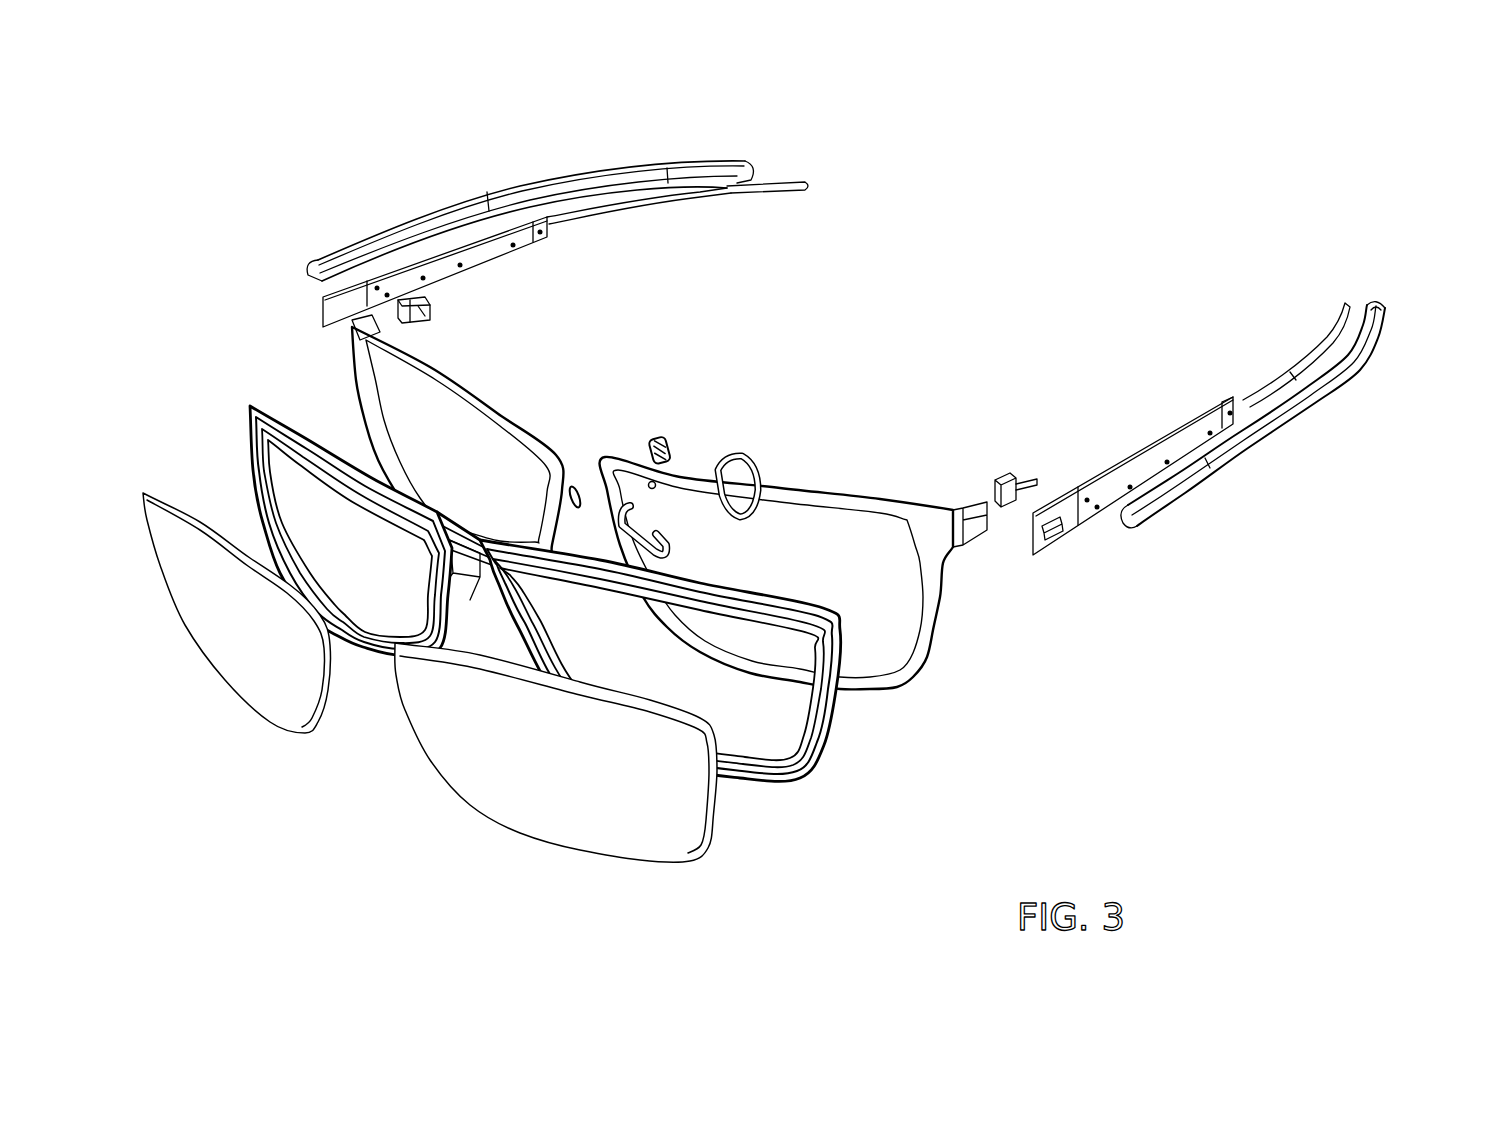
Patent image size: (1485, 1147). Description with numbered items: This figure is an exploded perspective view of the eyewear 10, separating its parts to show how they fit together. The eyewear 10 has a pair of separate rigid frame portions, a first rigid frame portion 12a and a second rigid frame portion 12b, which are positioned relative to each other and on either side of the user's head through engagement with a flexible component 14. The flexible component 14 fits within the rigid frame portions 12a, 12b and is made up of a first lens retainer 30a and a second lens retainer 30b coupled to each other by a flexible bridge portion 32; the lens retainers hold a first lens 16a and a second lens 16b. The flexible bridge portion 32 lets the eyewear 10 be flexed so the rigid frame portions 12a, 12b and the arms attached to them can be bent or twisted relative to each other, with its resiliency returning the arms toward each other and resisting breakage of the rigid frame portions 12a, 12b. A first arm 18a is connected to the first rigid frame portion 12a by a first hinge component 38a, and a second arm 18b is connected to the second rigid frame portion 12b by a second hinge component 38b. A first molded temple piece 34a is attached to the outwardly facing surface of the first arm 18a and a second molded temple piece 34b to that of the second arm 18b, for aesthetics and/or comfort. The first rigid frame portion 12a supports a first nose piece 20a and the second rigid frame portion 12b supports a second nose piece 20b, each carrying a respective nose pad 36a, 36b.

The eyewear 10 is at (784, 525).
The first rigid frame portion 12a is at (530, 430).
The second rigid frame portion 12b is at (857, 495).
The flexible component 14 is at (552, 609).
The first lens 16a is at (248, 642).
The second lens 16b is at (588, 762).
The first arm 18a is at (410, 273).
The second arm 18b is at (1157, 457).
The first nose piece 20a is at (663, 440).
The second nose piece 20b is at (653, 537).
The first lens retainer 30a is at (247, 477).
The second lens retainer 30b is at (806, 777).
The flexible bridge portion 32 is at (372, 453).
The first molded temple piece 34a is at (650, 167).
The second molded temple piece 34b is at (1312, 393).
The first nose pad 36a is at (578, 487).
The second nose pad 36b is at (743, 458).
The first hinge component 38a is at (427, 317).
The second hinge component 38b is at (1000, 477).